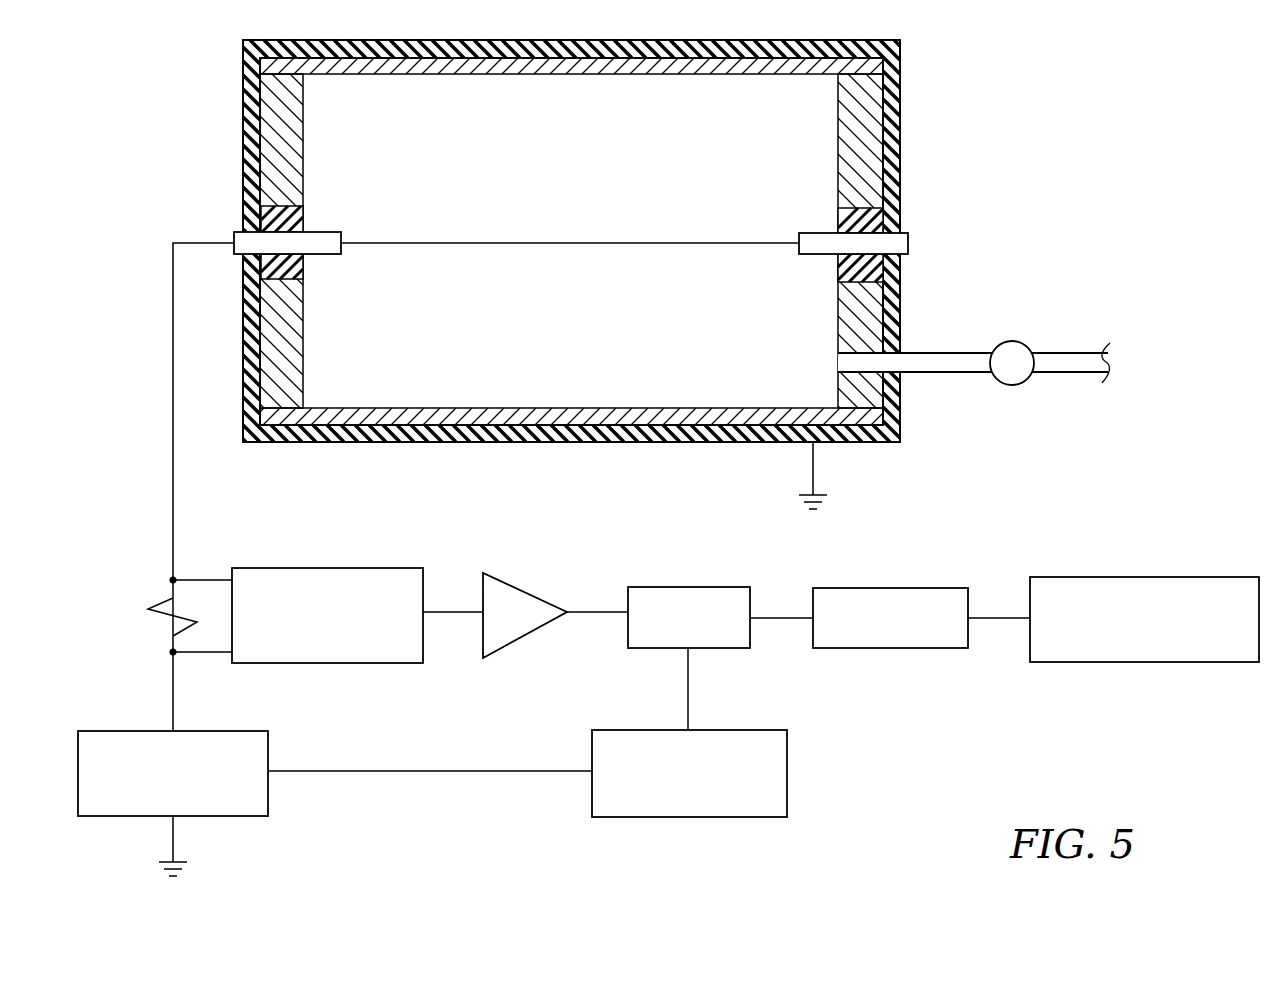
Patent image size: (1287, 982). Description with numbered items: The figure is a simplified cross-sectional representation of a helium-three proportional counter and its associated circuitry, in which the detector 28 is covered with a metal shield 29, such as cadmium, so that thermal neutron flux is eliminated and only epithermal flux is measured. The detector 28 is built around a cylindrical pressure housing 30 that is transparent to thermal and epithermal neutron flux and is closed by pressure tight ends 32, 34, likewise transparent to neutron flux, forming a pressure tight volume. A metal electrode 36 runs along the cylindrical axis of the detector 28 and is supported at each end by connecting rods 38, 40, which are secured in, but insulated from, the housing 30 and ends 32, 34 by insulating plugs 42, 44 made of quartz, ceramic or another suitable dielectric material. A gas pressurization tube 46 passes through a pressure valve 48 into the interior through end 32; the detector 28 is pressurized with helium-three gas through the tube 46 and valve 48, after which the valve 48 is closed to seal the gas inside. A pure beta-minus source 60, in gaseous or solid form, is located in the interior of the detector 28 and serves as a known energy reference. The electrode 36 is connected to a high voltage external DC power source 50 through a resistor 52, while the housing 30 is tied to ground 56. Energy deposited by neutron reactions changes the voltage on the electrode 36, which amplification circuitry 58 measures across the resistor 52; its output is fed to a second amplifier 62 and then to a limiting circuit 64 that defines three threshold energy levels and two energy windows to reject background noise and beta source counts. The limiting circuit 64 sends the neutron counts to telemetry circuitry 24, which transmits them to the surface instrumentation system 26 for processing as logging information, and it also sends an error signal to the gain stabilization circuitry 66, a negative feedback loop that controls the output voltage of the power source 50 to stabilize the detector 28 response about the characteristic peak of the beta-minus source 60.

The telemetry circuitry 24 is at (905, 588).
The surface instrumentation system 26 is at (1195, 577).
The detector 28 is at (986, 82).
The metal shield 29 is at (743, 40).
The cylindrical pressure housing 30 is at (572, 42).
The pressure tight end 32 is at (887, 128).
The pressure tight end 34 is at (257, 143).
The metal electrode 36 is at (571, 242).
The connecting rod 38 is at (817, 255).
The connecting rod 40 is at (327, 255).
The insulating plug 42 is at (838, 230).
The insulating plug 44 is at (302, 230).
The gas pressurization tube 46 is at (1068, 353).
The pressure valve 48 is at (1010, 341).
The high voltage external DC power source 50 is at (212, 731).
The resistor 52 is at (162, 604).
The ground 56 is at (813, 478).
The amplification circuitry 58 is at (358, 568).
The beta-minus source 60 is at (592, 342).
The amplifier 62 is at (520, 590).
The limiting circuit 64 is at (690, 587).
The gain stabilization circuitry 66 is at (720, 730).